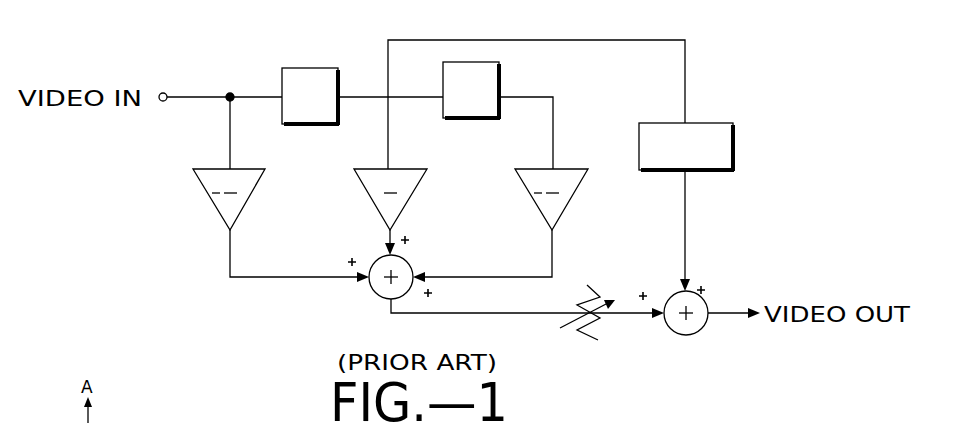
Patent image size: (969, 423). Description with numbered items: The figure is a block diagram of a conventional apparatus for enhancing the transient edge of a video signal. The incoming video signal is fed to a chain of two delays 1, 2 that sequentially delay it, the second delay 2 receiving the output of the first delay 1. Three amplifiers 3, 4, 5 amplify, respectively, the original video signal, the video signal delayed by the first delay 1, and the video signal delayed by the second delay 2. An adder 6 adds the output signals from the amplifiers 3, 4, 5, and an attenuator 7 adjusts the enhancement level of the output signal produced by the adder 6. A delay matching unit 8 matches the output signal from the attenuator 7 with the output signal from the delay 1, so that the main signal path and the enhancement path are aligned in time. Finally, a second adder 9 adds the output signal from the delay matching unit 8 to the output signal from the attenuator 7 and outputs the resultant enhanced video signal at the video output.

The delay 1 is at (311, 68).
The delay 2 is at (499, 68).
The amplifier 3 is at (212, 200).
The amplifier 4 is at (372, 200).
The amplifier 5 is at (534, 200).
The adder 6 is at (375, 294).
The attenuator 7 is at (600, 340).
The delay matching unit 8 is at (700, 123).
The adder 9 is at (690, 335).